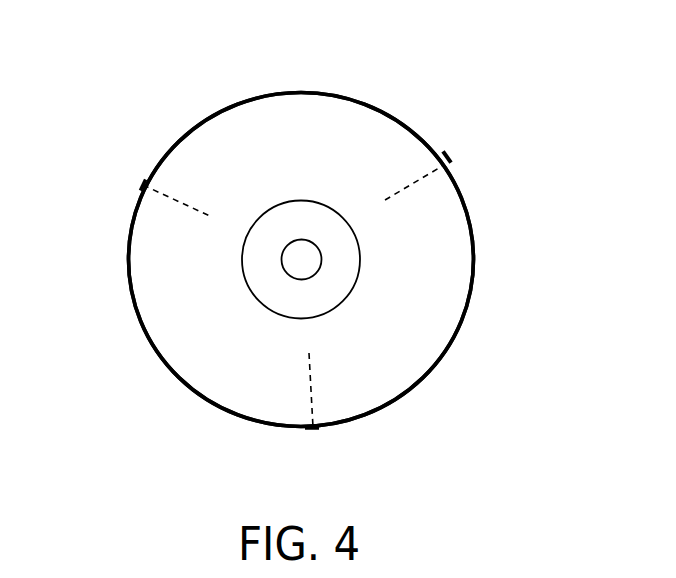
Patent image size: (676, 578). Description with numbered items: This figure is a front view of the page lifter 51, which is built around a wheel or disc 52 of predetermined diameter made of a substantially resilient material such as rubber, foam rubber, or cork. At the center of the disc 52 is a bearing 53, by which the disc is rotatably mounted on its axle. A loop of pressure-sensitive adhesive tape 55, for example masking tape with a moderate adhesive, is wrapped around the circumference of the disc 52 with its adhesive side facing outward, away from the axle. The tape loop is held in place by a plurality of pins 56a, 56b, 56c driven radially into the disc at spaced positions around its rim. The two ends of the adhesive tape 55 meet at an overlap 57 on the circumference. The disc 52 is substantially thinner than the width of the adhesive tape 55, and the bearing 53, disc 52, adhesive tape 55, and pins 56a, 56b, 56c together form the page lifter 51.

The page lifter 51 is at (178, 403).
The disc 52 is at (423, 347).
The bearing 53 is at (262, 288).
The pressure-sensitive adhesive tape 55 is at (235, 102).
The pin 56a is at (143, 183).
The pin 56b is at (423, 178).
The pin 56c is at (313, 405).
The overlap 57 is at (446, 155).